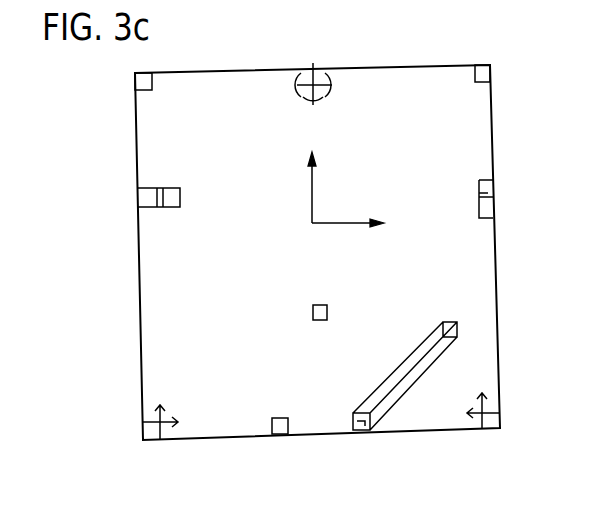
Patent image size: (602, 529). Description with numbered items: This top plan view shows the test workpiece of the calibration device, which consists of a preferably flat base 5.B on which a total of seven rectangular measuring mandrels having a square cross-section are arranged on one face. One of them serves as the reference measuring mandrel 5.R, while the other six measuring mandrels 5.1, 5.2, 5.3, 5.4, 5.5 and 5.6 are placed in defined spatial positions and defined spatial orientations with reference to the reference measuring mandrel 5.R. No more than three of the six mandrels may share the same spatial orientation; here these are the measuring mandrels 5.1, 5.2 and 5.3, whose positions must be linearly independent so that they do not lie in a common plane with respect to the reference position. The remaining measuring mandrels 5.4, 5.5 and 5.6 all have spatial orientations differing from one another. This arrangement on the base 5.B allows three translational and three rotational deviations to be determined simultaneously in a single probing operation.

The measuring mandrel 5.1 is at (150, 130).
The measuring mandrel 5.2 is at (485, 70).
The measuring mandrel 5.3 is at (290, 434).
The measuring mandrel 5.4 is at (145, 201).
The measuring mandrel 5.5 is at (493, 183).
The measuring mandrel 5.6 is at (412, 382).
The base 5.B is at (467, 275).
The reference measuring mandrel 5.R is at (325, 316).